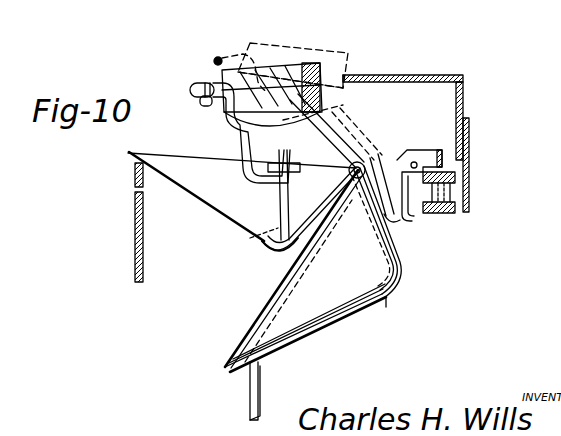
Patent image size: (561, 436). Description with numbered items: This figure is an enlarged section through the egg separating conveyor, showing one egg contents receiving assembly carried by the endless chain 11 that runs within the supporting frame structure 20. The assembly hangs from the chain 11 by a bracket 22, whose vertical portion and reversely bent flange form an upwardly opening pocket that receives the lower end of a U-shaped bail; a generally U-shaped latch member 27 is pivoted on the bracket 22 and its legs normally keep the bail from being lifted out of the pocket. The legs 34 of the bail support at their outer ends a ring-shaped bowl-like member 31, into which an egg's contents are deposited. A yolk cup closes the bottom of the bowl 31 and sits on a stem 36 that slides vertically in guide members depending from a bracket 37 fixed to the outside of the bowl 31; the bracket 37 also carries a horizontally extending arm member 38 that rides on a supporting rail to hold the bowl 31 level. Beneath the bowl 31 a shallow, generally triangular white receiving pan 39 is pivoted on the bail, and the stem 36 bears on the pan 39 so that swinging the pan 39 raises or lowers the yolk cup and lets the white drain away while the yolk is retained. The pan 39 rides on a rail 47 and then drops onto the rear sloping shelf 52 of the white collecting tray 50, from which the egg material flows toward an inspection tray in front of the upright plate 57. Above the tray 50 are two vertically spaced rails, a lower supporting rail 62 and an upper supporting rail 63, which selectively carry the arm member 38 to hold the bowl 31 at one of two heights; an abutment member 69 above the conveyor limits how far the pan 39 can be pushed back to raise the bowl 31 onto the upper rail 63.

The endless chain 11 is at (433, 210).
The supporting frame structure 20 is at (470, 196).
The bracket 22 is at (399, 221).
The latch member 27 is at (405, 153).
The bowl-like member 31 is at (328, 55).
The legs of the bail 34 is at (335, 128).
The stem 36 is at (276, 240).
The bracket 37 is at (240, 143).
The arm member 38 is at (195, 84).
The white receiving pan 39 is at (253, 322).
The rail 47 is at (135, 172).
The white collecting tray 50 is at (258, 394).
The rear sloping shelf 52 is at (350, 316).
The upright plate 57 is at (135, 217).
The lower supporting rail 62 is at (202, 102).
The upper supporting rail 63 is at (215, 58).
The abutment member 69 is at (418, 76).